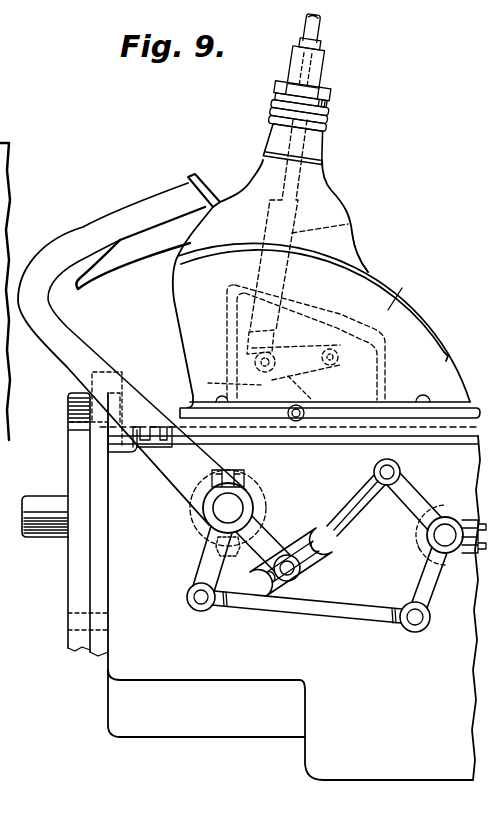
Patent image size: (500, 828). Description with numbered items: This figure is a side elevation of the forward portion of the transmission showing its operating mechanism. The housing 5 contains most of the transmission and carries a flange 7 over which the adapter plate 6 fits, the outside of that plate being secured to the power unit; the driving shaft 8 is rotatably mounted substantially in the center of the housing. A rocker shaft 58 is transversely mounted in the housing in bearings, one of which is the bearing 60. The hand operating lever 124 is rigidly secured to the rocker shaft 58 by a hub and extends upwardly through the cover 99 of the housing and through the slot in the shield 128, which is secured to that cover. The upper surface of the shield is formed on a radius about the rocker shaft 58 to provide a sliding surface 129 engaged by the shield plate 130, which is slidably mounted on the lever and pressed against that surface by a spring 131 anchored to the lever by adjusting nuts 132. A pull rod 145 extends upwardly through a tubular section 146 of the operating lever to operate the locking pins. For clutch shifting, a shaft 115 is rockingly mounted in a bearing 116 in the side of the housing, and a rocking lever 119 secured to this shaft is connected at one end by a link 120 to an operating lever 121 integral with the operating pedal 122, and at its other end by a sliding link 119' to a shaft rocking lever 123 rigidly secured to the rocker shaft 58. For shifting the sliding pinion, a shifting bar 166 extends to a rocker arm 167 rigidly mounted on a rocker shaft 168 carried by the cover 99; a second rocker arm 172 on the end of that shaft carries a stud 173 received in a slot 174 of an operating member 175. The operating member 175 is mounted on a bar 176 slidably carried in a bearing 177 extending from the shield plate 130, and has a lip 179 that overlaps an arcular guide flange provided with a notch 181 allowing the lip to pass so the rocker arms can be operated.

The bar 176 is at (324, 25).
The pull rod 145 is at (324, 42).
The tubular section 146 is at (327, 64).
The hand operating lever 124 is at (331, 86).
The adjusting nuts 132 is at (328, 98).
The spring 131 is at (328, 121).
The shield plate 130 is at (316, 170).
The bearing 177 is at (348, 224).
The slot 174 is at (372, 262).
The shield 128 is at (398, 296).
The sliding surface 129 is at (427, 330).
The shifting bar 166 is at (482, 402).
The lip 179 is at (280, 283).
The operating member 175 is at (238, 308).
The notch 181 is at (284, 333).
The rocker shaft 168 is at (256, 356).
The rocker arm 167 is at (208, 383).
The stud 173 is at (338, 357).
The rocker arm 172 is at (320, 370).
The cover 99 is at (447, 437).
The operating pedal 122 is at (168, 473).
The bearing 60 is at (202, 516).
The rocker shaft 58 is at (232, 502).
The shaft rocking lever 123 is at (270, 535).
The operating lever 121 is at (197, 562).
The sliding link 119' is at (317, 535).
The bearing 116 is at (420, 552).
The shaft 115 is at (448, 523).
The rocking lever 119 is at (419, 536).
The link 120 is at (370, 620).
The shaft 8 is at (53, 537).
The adapter plate 6 is at (70, 577).
The flange 7 is at (80, 632).
The housing 5 is at (310, 747).